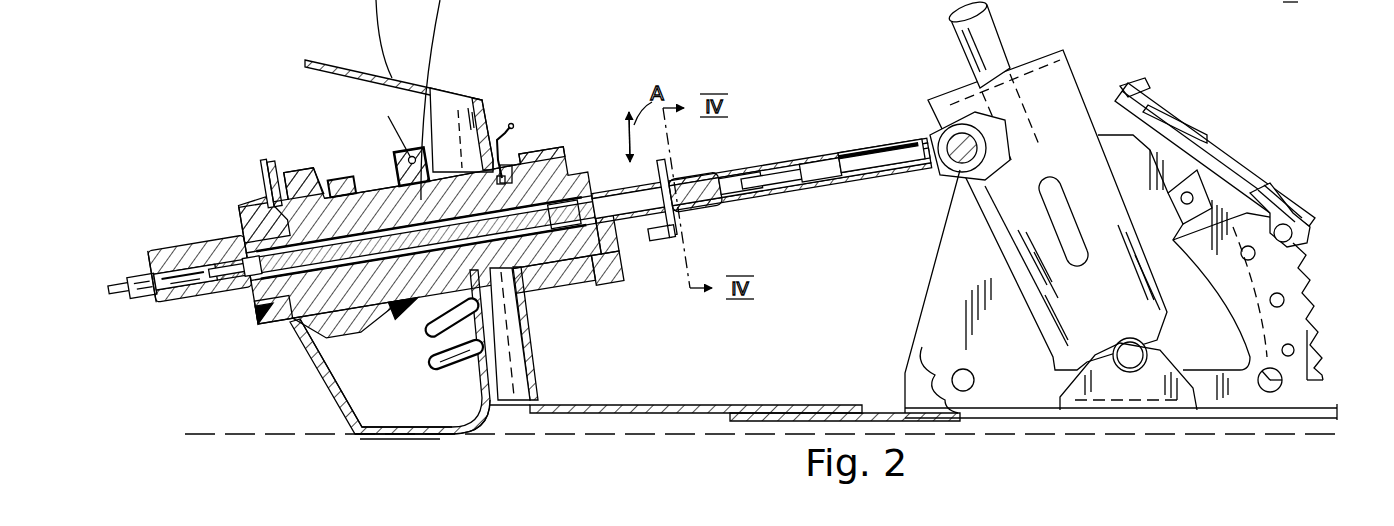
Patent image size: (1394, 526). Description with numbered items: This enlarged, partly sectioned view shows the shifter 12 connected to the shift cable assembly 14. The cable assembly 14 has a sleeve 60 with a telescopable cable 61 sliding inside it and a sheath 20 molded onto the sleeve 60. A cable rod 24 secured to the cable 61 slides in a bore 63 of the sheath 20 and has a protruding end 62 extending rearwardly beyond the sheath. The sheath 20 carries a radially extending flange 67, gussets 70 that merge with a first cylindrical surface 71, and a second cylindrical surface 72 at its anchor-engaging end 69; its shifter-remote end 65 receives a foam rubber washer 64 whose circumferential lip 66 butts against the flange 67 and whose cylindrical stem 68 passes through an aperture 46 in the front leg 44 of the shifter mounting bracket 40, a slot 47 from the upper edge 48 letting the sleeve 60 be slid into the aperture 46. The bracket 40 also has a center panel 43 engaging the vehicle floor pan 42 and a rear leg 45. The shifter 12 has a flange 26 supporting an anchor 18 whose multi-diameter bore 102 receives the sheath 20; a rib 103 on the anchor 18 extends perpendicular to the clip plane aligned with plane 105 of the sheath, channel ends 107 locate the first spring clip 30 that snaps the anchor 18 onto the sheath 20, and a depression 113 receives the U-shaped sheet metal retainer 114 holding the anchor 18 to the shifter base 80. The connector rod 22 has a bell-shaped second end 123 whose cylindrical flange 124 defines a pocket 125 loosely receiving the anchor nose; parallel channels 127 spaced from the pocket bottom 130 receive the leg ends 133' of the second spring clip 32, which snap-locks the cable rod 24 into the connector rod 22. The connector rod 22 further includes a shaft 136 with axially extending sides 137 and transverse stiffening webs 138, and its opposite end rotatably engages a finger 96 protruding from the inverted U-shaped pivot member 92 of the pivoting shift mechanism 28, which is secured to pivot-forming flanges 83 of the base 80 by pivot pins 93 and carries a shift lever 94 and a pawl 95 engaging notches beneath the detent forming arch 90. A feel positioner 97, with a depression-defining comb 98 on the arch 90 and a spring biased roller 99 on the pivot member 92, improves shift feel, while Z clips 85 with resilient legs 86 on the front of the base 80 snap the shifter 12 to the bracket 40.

The shifter 12 is at (1327, 224).
The shift cable assembly 14 is at (157, 247).
The anchor 18 is at (333, 163).
The sheath 20 is at (287, 170).
The connector rod 22 is at (792, 152).
The cable rod 24 is at (644, 186).
The flange 26 is at (366, 73).
The pivoting shift mechanism 28 is at (1068, 34).
The first spring clip 30 is at (388, 130).
The second spring clip 32 is at (658, 238).
The shifter mounting bracket 40 is at (358, 442).
The vehicle floor pan 42 is at (215, 433).
The center panel 43 is at (403, 437).
The front leg 44 is at (262, 170).
The rear leg 45 is at (487, 380).
The aperture 46 is at (513, 330).
The slot 47 is at (478, 108).
The upper edge 48 is at (465, 97).
The sleeve 60 is at (136, 298).
The telescopable cable 61 is at (113, 293).
The protruding end 62 is at (600, 228).
The bore 63 is at (388, 192).
The foam rubber washer 64 is at (234, 209).
The shifter-remote end 65 is at (192, 252).
The circumferential lip 66 is at (277, 170).
The radially extending flange 67 is at (295, 172).
The cylindrical stem 68 is at (258, 322).
The anchor-engaging end 69 is at (440, 100).
The gussets 70 is at (370, 303).
The first cylindrical surface 71 is at (388, 300).
The second cylindrical surface 72 is at (507, 367).
The base 80 is at (750, 400).
The pivot-forming flanges 83 is at (1113, 398).
The Z clips 85 is at (439, 369).
The resilient legs 86 is at (430, 328).
The detent forming arch 90 is at (1340, 333).
The inverted U-shaped member 92 is at (1240, 117).
The pivot pins 93 is at (1132, 362).
The shift lever 94 is at (953, 38).
The pawl 95 is at (1047, 197).
The finger 96 is at (958, 180).
The feel positioner 97 is at (1266, 181).
The depression-defining comb 98 is at (1317, 313).
The spring biased roller 99 is at (1288, 223).
The multi-diameter bore 102 is at (475, 127).
The rib 103 is at (400, 172).
The plane 105 is at (398, 68).
The channel ends 107 is at (440, 303).
The depression 113 is at (510, 152).
The U-shaped sheet metal retainer 114 is at (516, 120).
The second end 123 is at (595, 258).
The cylindrically-shaped flange 124 is at (555, 275).
The pocket 125 is at (568, 175).
The channels 127 is at (689, 174).
The bottom 130 is at (724, 171).
The leg ends 133' is at (711, 238).
The shaft 136 is at (842, 154).
The axially extending sides 137 is at (880, 187).
The transverse stiffening webs 138 is at (836, 170).